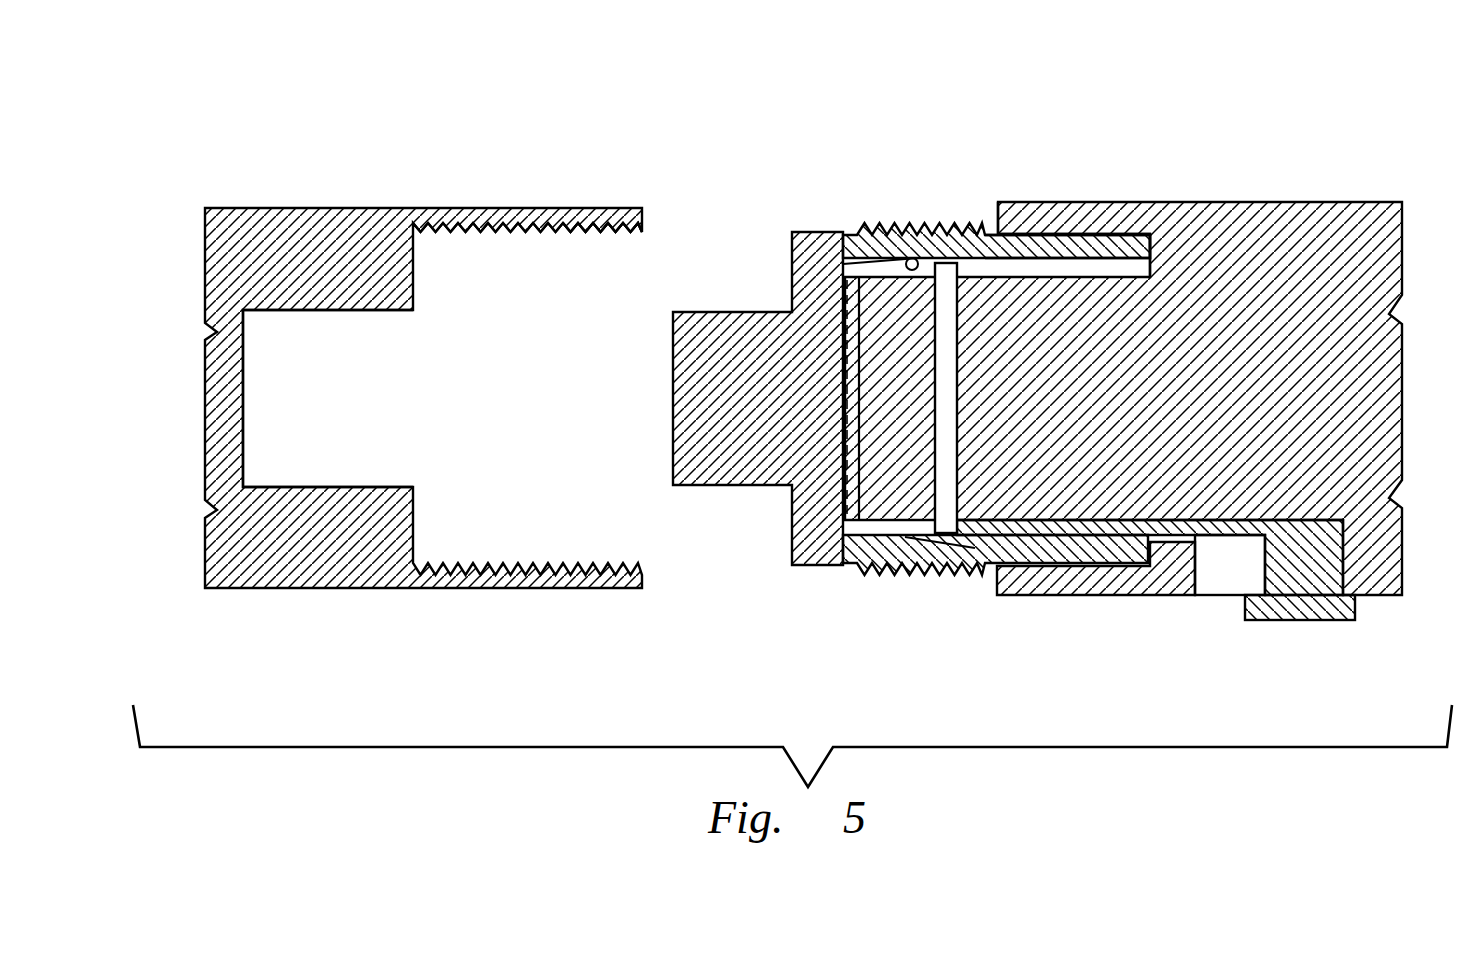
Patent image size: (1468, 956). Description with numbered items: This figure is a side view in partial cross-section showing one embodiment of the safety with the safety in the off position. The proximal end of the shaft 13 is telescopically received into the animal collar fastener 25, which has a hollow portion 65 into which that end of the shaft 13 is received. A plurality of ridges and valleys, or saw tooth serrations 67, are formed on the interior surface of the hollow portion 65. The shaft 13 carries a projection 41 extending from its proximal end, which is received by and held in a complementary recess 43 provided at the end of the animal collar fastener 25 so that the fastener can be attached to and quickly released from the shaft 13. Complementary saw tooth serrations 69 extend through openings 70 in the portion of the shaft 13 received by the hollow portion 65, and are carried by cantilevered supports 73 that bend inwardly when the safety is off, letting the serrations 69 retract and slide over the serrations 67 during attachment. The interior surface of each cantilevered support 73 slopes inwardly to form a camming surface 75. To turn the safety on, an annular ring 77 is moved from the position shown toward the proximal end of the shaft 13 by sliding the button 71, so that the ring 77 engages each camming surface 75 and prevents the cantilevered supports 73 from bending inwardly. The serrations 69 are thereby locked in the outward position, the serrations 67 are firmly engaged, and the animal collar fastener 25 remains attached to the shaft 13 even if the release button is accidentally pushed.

The shaft 13 is at (1298, 202).
The animal collar fastener 25 is at (416, 179).
The projection 41 is at (698, 457).
The complementary recess 43 is at (300, 487).
The hollow portion 65 is at (574, 172).
The saw tooth serrations 67 is at (598, 232).
The saw tooth serrations 69 is at (866, 224).
The opening 70 is at (995, 202).
The switch 71 is at (1296, 621).
The cantilevered supports 73 is at (1113, 248).
The camming surface 75 is at (915, 257).
The annular ring 77 is at (946, 293).